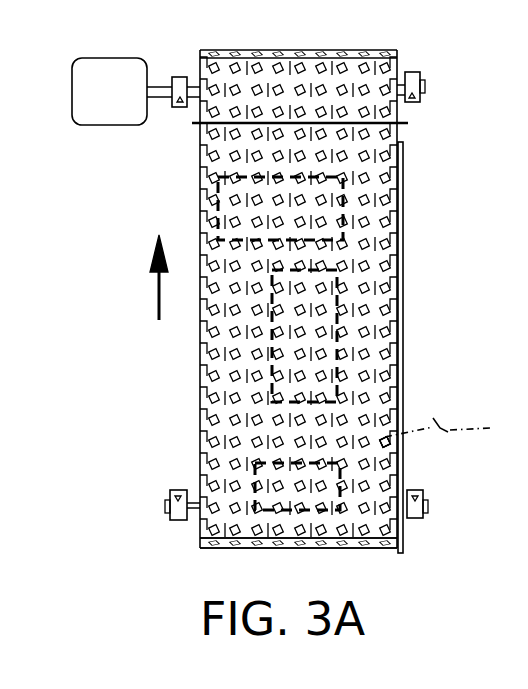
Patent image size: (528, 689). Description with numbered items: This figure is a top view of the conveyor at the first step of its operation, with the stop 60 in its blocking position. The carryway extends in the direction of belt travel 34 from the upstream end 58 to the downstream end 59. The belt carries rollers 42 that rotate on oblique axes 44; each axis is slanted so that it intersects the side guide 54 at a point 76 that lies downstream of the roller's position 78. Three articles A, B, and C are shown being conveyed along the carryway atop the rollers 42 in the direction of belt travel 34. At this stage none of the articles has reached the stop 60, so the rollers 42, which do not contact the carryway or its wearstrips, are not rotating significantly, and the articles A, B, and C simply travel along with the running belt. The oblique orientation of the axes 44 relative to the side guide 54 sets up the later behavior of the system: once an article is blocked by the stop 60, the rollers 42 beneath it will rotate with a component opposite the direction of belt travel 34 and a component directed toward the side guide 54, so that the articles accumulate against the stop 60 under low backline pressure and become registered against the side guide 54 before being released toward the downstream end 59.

The direction of belt travel 34 is at (158, 296).
The rollers 42 is at (210, 157).
The oblique axes 44 is at (450, 428).
The side guide 54 is at (403, 258).
The upstream end 58 is at (200, 548).
The downstream end 59 is at (308, 48).
The stop 60 is at (408, 123).
The point 76 is at (398, 436).
The roller's position 78 is at (386, 445).
The article A is at (343, 192).
The article B is at (337, 310).
The article C is at (350, 550).